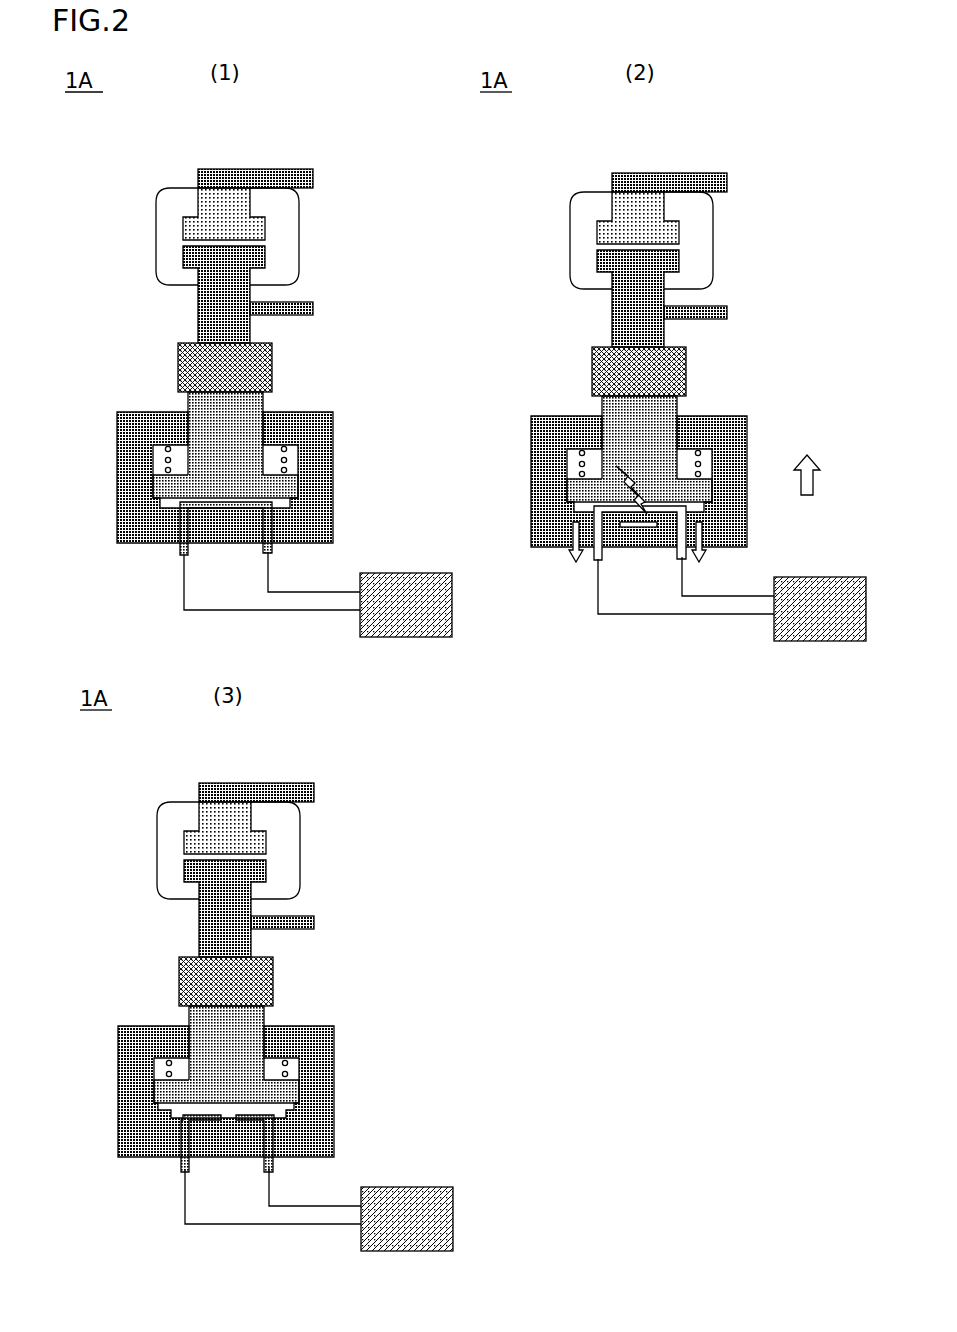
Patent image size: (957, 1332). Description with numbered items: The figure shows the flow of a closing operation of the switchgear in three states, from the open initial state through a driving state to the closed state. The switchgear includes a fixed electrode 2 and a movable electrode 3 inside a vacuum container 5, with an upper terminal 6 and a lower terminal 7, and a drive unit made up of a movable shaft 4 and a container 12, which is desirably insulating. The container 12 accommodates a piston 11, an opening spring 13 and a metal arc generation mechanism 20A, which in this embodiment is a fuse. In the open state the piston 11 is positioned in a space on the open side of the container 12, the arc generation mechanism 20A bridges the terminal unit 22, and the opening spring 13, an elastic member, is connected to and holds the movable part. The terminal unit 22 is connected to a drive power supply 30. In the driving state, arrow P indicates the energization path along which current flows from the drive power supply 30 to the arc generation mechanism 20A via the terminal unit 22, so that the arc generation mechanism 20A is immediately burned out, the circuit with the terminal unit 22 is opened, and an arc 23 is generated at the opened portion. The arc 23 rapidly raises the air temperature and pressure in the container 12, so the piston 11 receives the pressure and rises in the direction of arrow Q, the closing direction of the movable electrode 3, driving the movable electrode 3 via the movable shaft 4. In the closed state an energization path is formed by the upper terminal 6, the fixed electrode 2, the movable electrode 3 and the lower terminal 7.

The fixed electrode 2 is at (198, 200).
The movable electrode 3 is at (186, 260).
The movable shaft 4 is at (272, 355).
The vacuum container 5 is at (298, 243).
The upper terminal 6 is at (290, 170).
The lower terminal 7 is at (313, 305).
The piston 11 is at (235, 417).
The container 12 is at (300, 483).
The opening spring 13 is at (287, 446).
The arc generation mechanism 20A is at (207, 500).
The terminal unit 22 is at (266, 553).
The arc 23 is at (637, 468).
The drive power supply 30 is at (380, 586).
The arrow P is at (700, 513).
The arrow Q is at (819, 475).